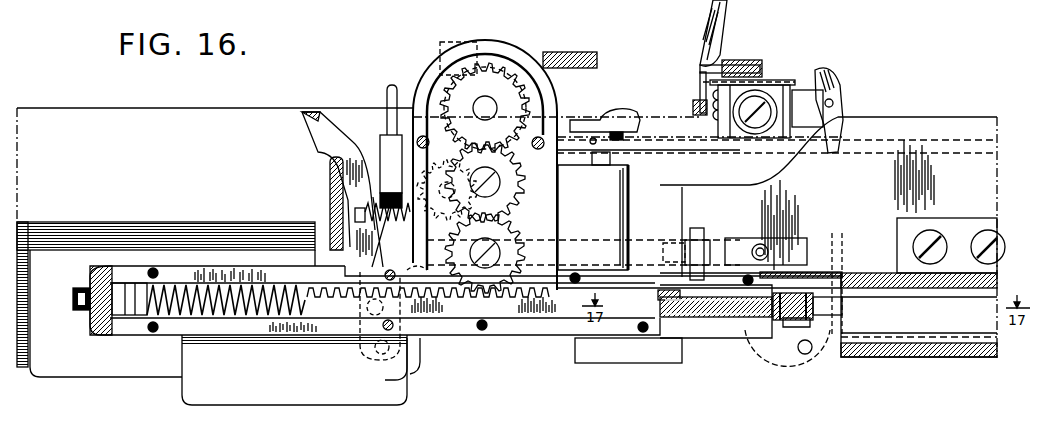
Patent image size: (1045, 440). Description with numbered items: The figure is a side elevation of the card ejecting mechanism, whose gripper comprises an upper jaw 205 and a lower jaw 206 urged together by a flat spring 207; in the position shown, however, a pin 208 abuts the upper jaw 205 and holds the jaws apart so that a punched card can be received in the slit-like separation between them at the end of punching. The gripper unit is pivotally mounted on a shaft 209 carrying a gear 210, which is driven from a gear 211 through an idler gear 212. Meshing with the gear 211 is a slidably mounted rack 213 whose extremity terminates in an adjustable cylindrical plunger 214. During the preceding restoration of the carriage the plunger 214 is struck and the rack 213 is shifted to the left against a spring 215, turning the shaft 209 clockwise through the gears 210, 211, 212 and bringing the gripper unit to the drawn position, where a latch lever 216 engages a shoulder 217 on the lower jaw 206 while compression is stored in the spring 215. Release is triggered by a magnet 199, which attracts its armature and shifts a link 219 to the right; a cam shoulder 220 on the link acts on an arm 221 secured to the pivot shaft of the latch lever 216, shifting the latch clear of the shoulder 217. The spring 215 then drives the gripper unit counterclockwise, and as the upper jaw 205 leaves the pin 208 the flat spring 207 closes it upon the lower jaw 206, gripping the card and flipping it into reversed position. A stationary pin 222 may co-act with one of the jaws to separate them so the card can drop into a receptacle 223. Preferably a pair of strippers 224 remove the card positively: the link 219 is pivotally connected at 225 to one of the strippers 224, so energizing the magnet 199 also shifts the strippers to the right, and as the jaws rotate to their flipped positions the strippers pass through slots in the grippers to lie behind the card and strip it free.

The magnet 199 is at (859, 235).
The upper jaw 205 is at (632, 123).
The lower jaw 206 is at (653, 140).
The flat spring 207 is at (573, 115).
The pin 208 is at (607, 155).
The shaft 209 is at (485, 107).
The gear 210 is at (520, 87).
The gear 211 is at (497, 230).
The idler gear 212 is at (510, 180).
The rack 213 is at (428, 302).
The adjustable cylindrical plunger 214 is at (823, 310).
The spring 215 is at (225, 315).
The latch lever 216 is at (430, 147).
The shoulder 217 is at (430, 127).
The link 219 is at (643, 240).
The cam shoulder 220 is at (373, 200).
The arm 221 is at (453, 200).
The stationary pin 222 is at (387, 120).
The receptacle 223 is at (53, 263).
The strippers 224 is at (318, 132).
The pivotal connection 225 is at (370, 305).